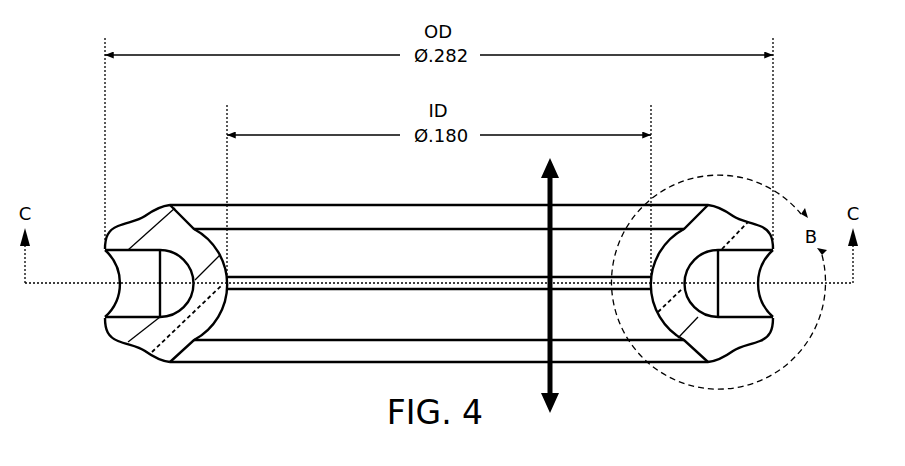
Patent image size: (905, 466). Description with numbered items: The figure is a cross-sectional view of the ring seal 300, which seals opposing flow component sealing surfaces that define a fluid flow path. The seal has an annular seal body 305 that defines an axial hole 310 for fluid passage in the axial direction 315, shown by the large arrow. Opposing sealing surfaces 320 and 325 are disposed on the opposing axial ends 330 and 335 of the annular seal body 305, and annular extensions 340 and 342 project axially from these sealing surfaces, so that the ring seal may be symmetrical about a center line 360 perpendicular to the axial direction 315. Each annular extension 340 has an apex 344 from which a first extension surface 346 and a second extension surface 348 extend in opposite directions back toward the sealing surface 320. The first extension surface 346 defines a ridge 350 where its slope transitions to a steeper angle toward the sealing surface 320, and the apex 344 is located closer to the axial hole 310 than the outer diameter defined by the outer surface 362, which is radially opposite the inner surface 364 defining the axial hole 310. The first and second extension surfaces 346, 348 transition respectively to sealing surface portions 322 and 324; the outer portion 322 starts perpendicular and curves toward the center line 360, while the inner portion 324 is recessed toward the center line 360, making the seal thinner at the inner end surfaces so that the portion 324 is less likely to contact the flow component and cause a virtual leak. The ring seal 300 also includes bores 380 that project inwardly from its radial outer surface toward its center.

The ring seal 300 is at (125, 100).
The annular seal body 305 is at (383, 215).
The axial hole 310 is at (330, 312).
The axial direction 315 is at (553, 367).
The sealing surface 320 is at (85, 195).
The sealing surface portion 322 is at (130, 220).
The sealing surface portion 324 is at (197, 230).
The sealing surface 325 is at (117, 368).
The axial end 330 is at (376, 122).
The axial end 335 is at (346, 387).
The annular extension 340 is at (165, 205).
The annular extension 342 is at (168, 352).
The apex 344 is at (170, 205).
The first extension surface 346 is at (132, 193).
The second extension surface 348 is at (187, 213).
The ridge 350 is at (147, 212).
The center line 360 is at (52, 285).
The outer surface 362 is at (103, 240).
The inner surface 364 is at (230, 275).
The bores 380 is at (147, 273).